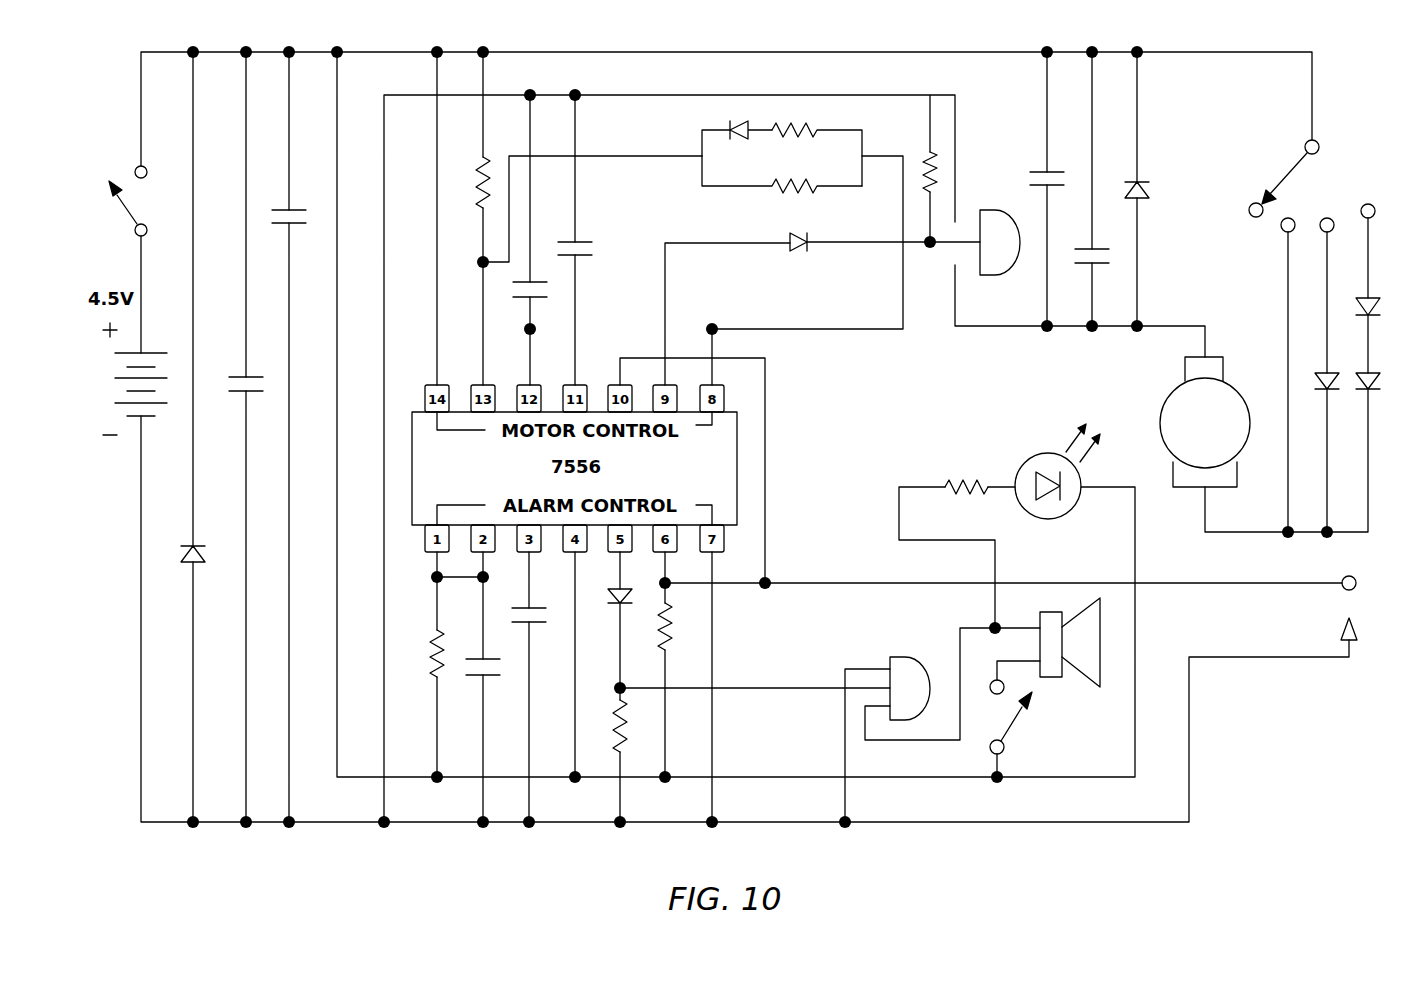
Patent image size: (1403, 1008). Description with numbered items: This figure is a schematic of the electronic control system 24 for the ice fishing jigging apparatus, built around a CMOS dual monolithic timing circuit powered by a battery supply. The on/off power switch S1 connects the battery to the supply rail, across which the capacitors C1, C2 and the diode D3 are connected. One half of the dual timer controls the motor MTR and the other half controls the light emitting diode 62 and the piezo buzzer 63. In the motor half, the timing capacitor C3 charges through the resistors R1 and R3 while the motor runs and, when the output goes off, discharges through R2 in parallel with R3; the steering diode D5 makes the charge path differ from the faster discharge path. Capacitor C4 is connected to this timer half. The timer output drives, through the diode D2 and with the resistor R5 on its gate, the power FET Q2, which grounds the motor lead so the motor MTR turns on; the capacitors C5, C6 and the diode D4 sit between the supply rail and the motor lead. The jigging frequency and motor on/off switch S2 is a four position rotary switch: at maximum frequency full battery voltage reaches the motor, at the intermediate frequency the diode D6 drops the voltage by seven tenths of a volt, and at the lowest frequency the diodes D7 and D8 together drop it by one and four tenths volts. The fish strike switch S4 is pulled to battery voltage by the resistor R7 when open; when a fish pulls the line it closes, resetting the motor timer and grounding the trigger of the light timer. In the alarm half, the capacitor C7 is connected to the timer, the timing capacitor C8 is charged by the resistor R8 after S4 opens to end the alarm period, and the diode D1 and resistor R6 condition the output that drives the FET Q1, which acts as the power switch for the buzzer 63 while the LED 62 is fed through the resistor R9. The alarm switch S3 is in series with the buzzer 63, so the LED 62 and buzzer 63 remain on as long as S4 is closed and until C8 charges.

The on/off power switch S1 is at (146, 201).
The jigging frequency and motor on/off switch S2 is at (1285, 178).
The alarm switch S3 is at (1003, 717).
The fish strike switch S4 is at (1333, 608).
The capacitor C1 is at (282, 204).
The capacitor C2 is at (237, 371).
The timing capacitor C3 is at (518, 305).
The capacitor C4 is at (585, 266).
The capacitor C5 is at (1040, 165).
The capacitor C6 is at (1083, 243).
The capacitor C7 is at (536, 633).
The timing capacitor C8 is at (474, 683).
The resistor R1 is at (470, 182).
The resistor R2 is at (817, 143).
The resistor R3 is at (782, 191).
The resistor R5 is at (917, 158).
The resistor R6 is at (601, 726).
The resistor R7 is at (679, 626).
The resistor R8 is at (423, 653).
The resistor R9 is at (966, 473).
The diode D1 is at (610, 585).
The diode D2 is at (801, 260).
The diode D3 is at (206, 540).
The diode D4 is at (1150, 173).
The steering diode D5 is at (737, 128).
The diode D6 is at (1316, 367).
The diode D7 is at (1379, 293).
The diode D8 is at (1378, 367).
The FET Q1 is at (916, 678).
The power FET Q2 is at (997, 258).
The motor MTR is at (1205, 422).
The light (LED) 62 is at (1057, 488).
The piezo buzzer 63 is at (1070, 655).
The control system 24 is at (1245, 752).